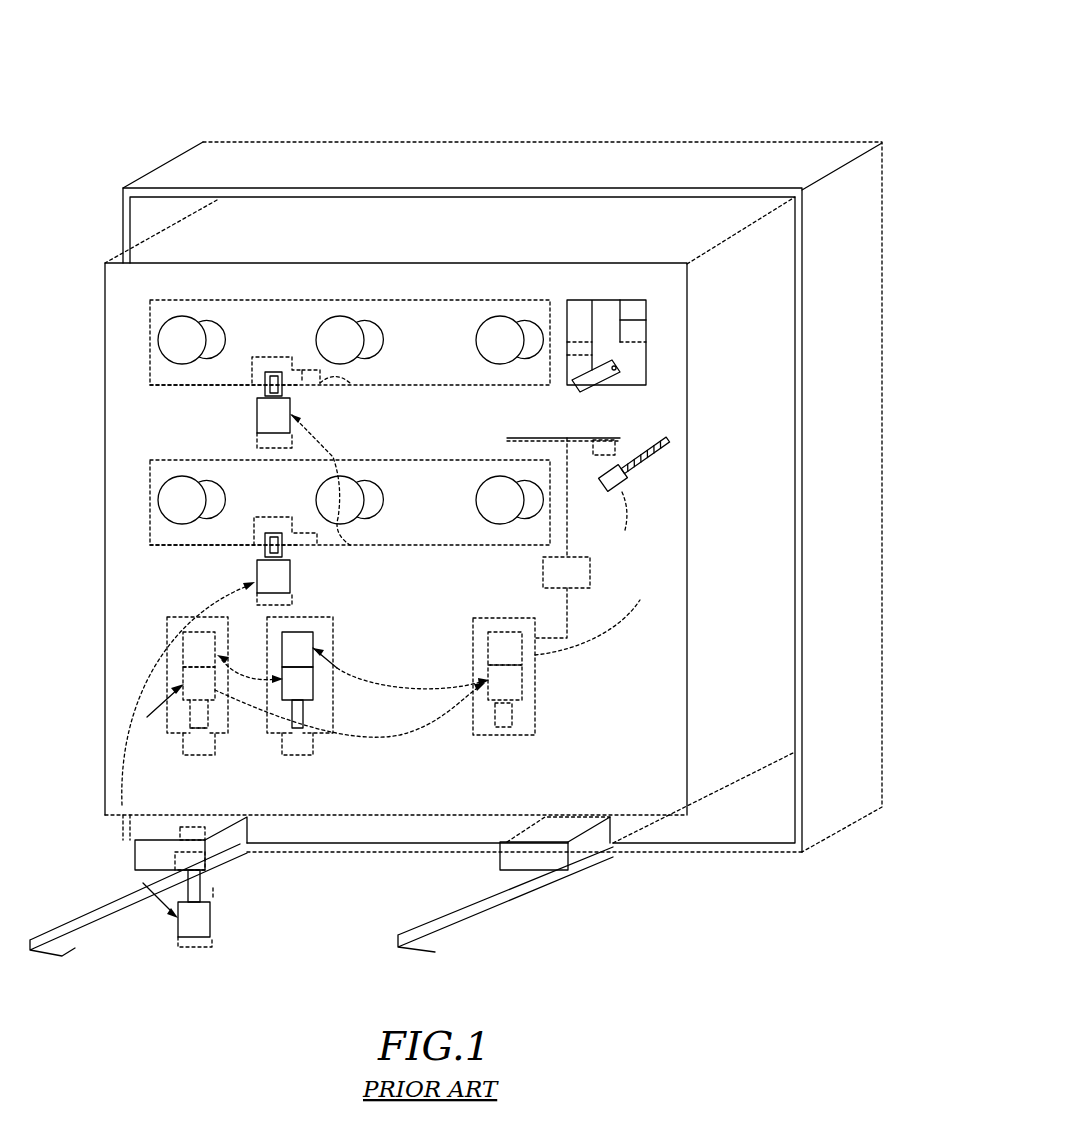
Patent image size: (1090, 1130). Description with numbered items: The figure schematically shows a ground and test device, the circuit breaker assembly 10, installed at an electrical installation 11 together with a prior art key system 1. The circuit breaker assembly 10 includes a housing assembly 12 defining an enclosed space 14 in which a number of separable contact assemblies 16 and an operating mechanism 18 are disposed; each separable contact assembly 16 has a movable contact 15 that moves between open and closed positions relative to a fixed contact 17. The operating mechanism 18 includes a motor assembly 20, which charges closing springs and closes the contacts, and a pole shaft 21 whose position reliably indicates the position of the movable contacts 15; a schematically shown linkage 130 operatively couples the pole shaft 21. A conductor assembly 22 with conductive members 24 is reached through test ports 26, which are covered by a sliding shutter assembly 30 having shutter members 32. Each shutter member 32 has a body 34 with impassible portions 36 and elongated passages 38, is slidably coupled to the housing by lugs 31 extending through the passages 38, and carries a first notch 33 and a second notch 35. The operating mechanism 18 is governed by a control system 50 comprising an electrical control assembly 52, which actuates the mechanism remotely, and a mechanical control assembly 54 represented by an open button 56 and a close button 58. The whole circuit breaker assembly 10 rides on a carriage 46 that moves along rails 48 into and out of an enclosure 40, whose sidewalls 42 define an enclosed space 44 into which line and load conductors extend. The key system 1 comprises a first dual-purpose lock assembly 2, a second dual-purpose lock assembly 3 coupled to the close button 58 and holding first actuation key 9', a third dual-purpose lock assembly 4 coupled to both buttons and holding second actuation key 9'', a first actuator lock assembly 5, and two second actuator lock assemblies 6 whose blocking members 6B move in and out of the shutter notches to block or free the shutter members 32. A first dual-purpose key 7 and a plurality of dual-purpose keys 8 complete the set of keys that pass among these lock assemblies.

The prior art key system 1 is at (545, 735).
The first dual-purpose lock assembly 2 is at (510, 598).
The second dual-purpose lock assembly 3 is at (172, 618).
The third dual-purpose lock assembly 4 is at (330, 618).
The first actuator lock assembly 5 is at (215, 870).
The second actuator lock assembly 6 is at (257, 402).
The blocking member 6B is at (283, 356).
The first dual-purpose key 7 is at (475, 630).
The dual-purpose key 8 is at (183, 636).
The first actuation key 9' is at (199, 824).
The second actuation key 9'' is at (323, 546).
The circuit breaker assembly 10 is at (853, 146).
The electrical installation 11 is at (722, 82).
The housing assembly 12 is at (680, 215).
The enclosed space 14 is at (582, 270).
The movable contact 15 is at (616, 375).
The separable contact assemblies 16 is at (655, 410).
The fixed contact 17 is at (627, 532).
The operating mechanism 18 is at (605, 298).
The motor assembly 20 is at (575, 352).
The pole shaft 21 is at (567, 500).
The conductor assembly 22 is at (575, 436).
The conductive members 24 is at (517, 438).
The test ports 26 is at (530, 328).
The shutter assembly 30 is at (135, 311).
The lugs 31 is at (181, 328).
The shutter members 32 is at (155, 373).
The first notch 33 is at (258, 370).
The body 34 is at (190, 462).
The second notch 35 is at (350, 384).
The impassible portions 36 is at (305, 302).
The elongated passages 38 is at (383, 345).
The enclosure 40 is at (796, 860).
The sidewalls 42 is at (820, 835).
The enclosed space 44 is at (720, 820).
The carriage 46 is at (225, 832).
The rails 48 is at (303, 712).
The control system 50 is at (578, 305).
The electrical control assembly 52 is at (633, 302).
The mechanical control assembly 54 is at (640, 330).
The open button 56 is at (310, 755).
The close button 58 is at (212, 757).
The linkage 130 is at (573, 557).